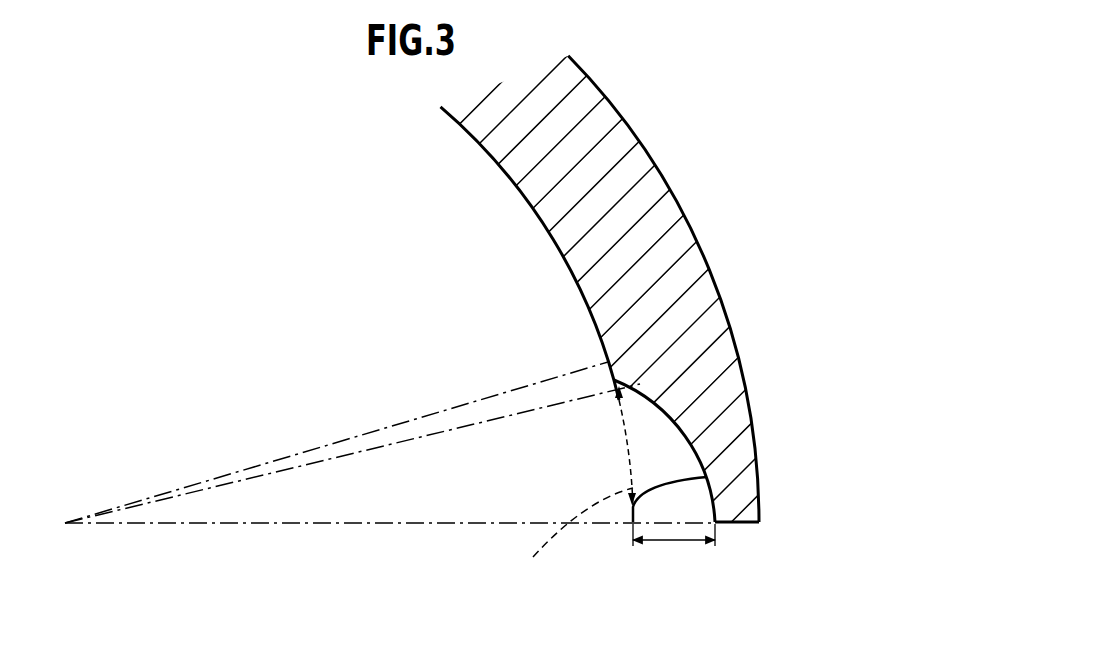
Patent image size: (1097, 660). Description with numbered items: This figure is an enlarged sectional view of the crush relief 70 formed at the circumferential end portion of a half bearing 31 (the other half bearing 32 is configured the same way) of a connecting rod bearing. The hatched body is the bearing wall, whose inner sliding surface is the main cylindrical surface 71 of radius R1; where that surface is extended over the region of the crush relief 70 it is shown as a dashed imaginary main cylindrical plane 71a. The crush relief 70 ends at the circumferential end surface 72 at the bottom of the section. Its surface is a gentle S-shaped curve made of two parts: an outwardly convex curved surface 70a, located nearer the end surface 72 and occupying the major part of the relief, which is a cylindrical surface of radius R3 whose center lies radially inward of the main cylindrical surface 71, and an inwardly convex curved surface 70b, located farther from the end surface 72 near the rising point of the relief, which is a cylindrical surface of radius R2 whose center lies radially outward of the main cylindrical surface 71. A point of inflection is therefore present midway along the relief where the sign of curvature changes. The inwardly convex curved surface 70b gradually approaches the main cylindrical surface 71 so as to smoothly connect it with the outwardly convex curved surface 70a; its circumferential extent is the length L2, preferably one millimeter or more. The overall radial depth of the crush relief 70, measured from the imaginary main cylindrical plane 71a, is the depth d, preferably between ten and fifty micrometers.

The half bearing 31 is at (548, 300).
The half bearing 32 is at (614, 106).
The crush relief 70 is at (586, 482).
The outwardly convex curved surface 70a is at (625, 528).
The inwardly convex curved surface 70b is at (612, 390).
The main cylindrical surface 71 is at (486, 153).
The imaginary main cylindrical plane 71a is at (560, 532).
The circumferential end surface 72 is at (750, 523).
The radius of main cylindrical surface R1 is at (541, 241).
The radius of inwardly convex curved surface R2 is at (634, 364).
The radius of outwardly convex curved surface R3 is at (684, 458).
The circumferential length of inwardly convex curved surface L2 is at (631, 446).
The overall depth of crush relief d is at (674, 532).